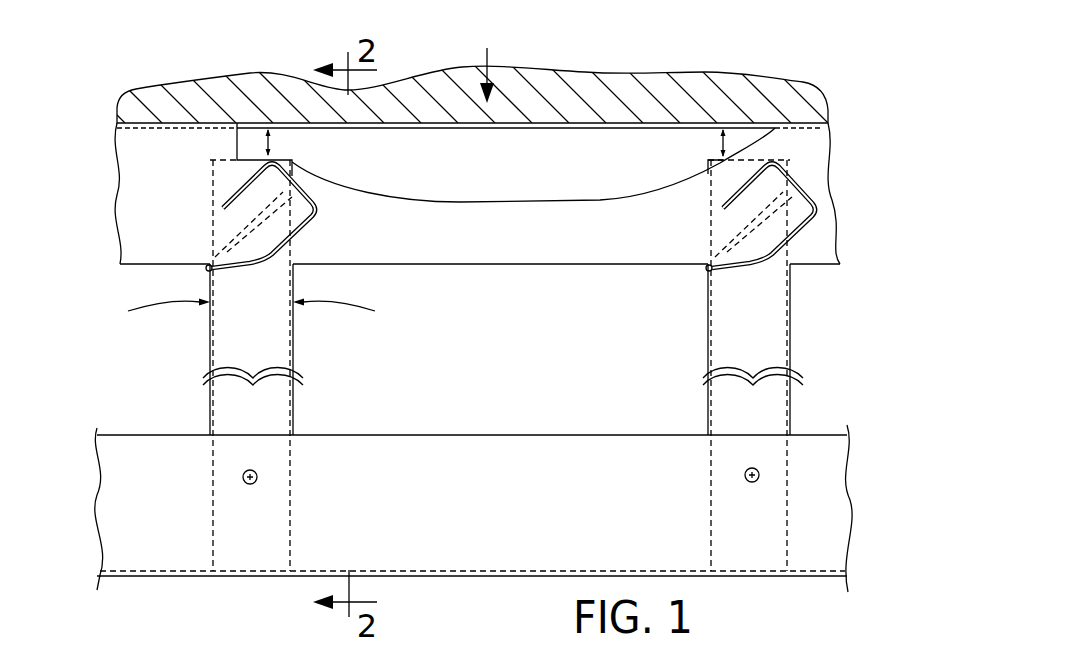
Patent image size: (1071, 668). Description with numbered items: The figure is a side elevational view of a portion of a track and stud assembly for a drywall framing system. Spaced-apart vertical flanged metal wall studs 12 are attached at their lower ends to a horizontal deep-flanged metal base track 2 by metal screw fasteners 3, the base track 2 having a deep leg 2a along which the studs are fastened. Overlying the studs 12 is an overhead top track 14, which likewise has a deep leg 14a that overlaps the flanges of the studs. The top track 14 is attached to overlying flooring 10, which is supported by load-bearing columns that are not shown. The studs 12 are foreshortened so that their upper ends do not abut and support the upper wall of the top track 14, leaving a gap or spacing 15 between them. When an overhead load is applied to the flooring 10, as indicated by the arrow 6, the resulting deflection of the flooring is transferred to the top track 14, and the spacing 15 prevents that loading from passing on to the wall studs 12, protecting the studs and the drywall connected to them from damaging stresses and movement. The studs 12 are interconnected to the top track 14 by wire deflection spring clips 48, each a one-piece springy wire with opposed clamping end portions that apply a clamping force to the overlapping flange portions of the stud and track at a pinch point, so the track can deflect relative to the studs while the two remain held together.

The base track 2 is at (488, 425).
The deep leg of base track 2a is at (472, 512).
The metal screw fastener 3 is at (258, 480).
The arrow 6 is at (487, 53).
The flooring 10 is at (588, 92).
The wall stud 12 is at (304, 340).
The top track 14 is at (656, 116).
The deep leg of top track 14a is at (520, 248).
The gap 15 is at (270, 140).
The wire deflection clip 48 is at (322, 224).